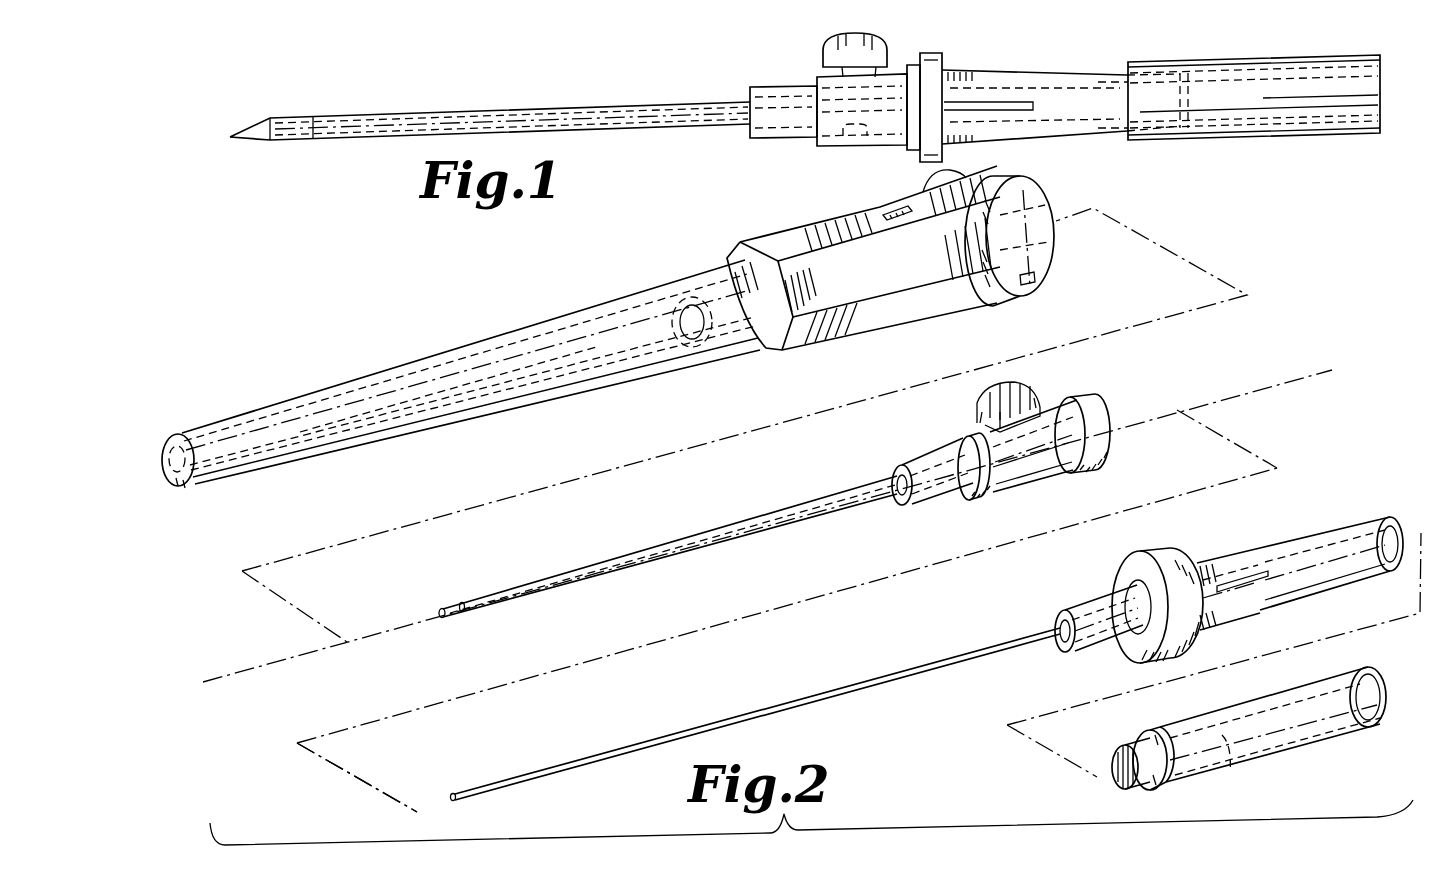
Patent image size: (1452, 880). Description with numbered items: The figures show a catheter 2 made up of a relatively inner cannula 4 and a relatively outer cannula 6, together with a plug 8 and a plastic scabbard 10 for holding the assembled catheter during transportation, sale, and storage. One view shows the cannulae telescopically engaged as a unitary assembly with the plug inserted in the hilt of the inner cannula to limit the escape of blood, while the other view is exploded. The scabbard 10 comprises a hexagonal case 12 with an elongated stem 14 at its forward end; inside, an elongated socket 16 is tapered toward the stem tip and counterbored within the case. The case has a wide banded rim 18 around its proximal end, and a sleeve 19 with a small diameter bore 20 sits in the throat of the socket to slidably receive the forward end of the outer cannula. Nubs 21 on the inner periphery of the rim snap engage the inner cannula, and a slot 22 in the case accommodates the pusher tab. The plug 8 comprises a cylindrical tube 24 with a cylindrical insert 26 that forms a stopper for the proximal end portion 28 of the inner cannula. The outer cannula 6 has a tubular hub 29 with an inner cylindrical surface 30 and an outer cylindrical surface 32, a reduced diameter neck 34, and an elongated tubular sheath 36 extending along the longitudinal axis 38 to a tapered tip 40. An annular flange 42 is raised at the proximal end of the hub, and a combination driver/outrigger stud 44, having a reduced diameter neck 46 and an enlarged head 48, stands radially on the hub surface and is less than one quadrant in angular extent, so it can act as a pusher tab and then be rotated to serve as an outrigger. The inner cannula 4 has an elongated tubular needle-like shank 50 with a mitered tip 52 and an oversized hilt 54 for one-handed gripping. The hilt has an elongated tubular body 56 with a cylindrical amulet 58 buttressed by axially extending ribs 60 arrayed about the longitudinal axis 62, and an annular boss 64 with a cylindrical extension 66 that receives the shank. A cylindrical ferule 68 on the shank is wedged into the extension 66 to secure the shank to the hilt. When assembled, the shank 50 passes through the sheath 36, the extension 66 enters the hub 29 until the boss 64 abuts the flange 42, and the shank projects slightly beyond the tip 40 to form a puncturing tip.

In FIG. 1, the catheter 2 is at (716, 79).
In FIG. 2, the relatively inner cannula 4 is at (1008, 607).
In FIG. 1, the relatively outer cannula 6 is at (466, 100).
In FIG. 2, the relatively outer cannula 6 is at (858, 462).
In FIG. 1, the plug 8 is at (1254, 150).
In FIG. 2, the plug 8 is at (1322, 762).
In FIG. 2, the plastic scabbard 10 is at (695, 254).
In FIG. 2, the hexagonal case 12 is at (818, 222).
In FIG. 2, the elongated stem 14 is at (445, 350).
In FIG. 2, the elongated socket 16 is at (425, 422).
In FIG. 2, the wide banded rim 18 is at (1052, 245).
In FIG. 2, the sleeve 19 is at (700, 348).
In FIG. 2, the small diameter bore 20 is at (676, 378).
In FIG. 2, the nubs 21 is at (1040, 290).
In FIG. 2, the slot 22 is at (921, 205).
In FIG. 1, the cylindrical tube 24 is at (1305, 137).
In FIG. 2, the cylindrical tube 24 is at (1258, 700).
In FIG. 1, the cylindrical insert 26 is at (1112, 135).
In FIG. 2, the cylindrical insert 26 is at (1165, 787).
In FIG. 2, the proximal end portion 28 is at (1302, 527).
In FIG. 2, the tubular hub 29 is at (1053, 485).
In FIG. 1, the cylindrical surface 30 is at (857, 140).
In FIG. 2, the cylindrical surface 32 is at (985, 495).
In FIG. 2, the reduced diameter neck 34 is at (933, 468).
In FIG. 2, the elongated tubular sheath 36 is at (727, 540).
In FIG. 2, the longitudinal axis 38 is at (262, 664).
In FIG. 2, the tapered tip 40 is at (445, 617).
In FIG. 2, the annular flange 42 is at (1075, 398).
In FIG. 2, the combination driver/outrigger stud 44 is at (1020, 372).
In FIG. 2, the reduced diameter neck 46 is at (1097, 406).
In FIG. 2, the head 48 is at (978, 412).
In FIG. 2, the elongated tubular needle-like shank 50 is at (680, 740).
In FIG. 2, the mitered tip 52 is at (466, 800).
In FIG. 2, the hilt 54 is at (1216, 547).
In FIG. 2, the elongated tubular body 56 is at (1330, 570).
In FIG. 2, the cylindrical amulet 58 is at (1172, 560).
In FIG. 2, the axially extending ribs 60 is at (1235, 627).
In FIG. 2, the longitudinal axis 62 is at (362, 827).
In FIG. 2, the annular boss 64 is at (1112, 580).
In FIG. 2, the cylindrical extension 66 is at (1076, 607).
In FIG. 2, the cylindrical ferule 68 is at (1100, 657).